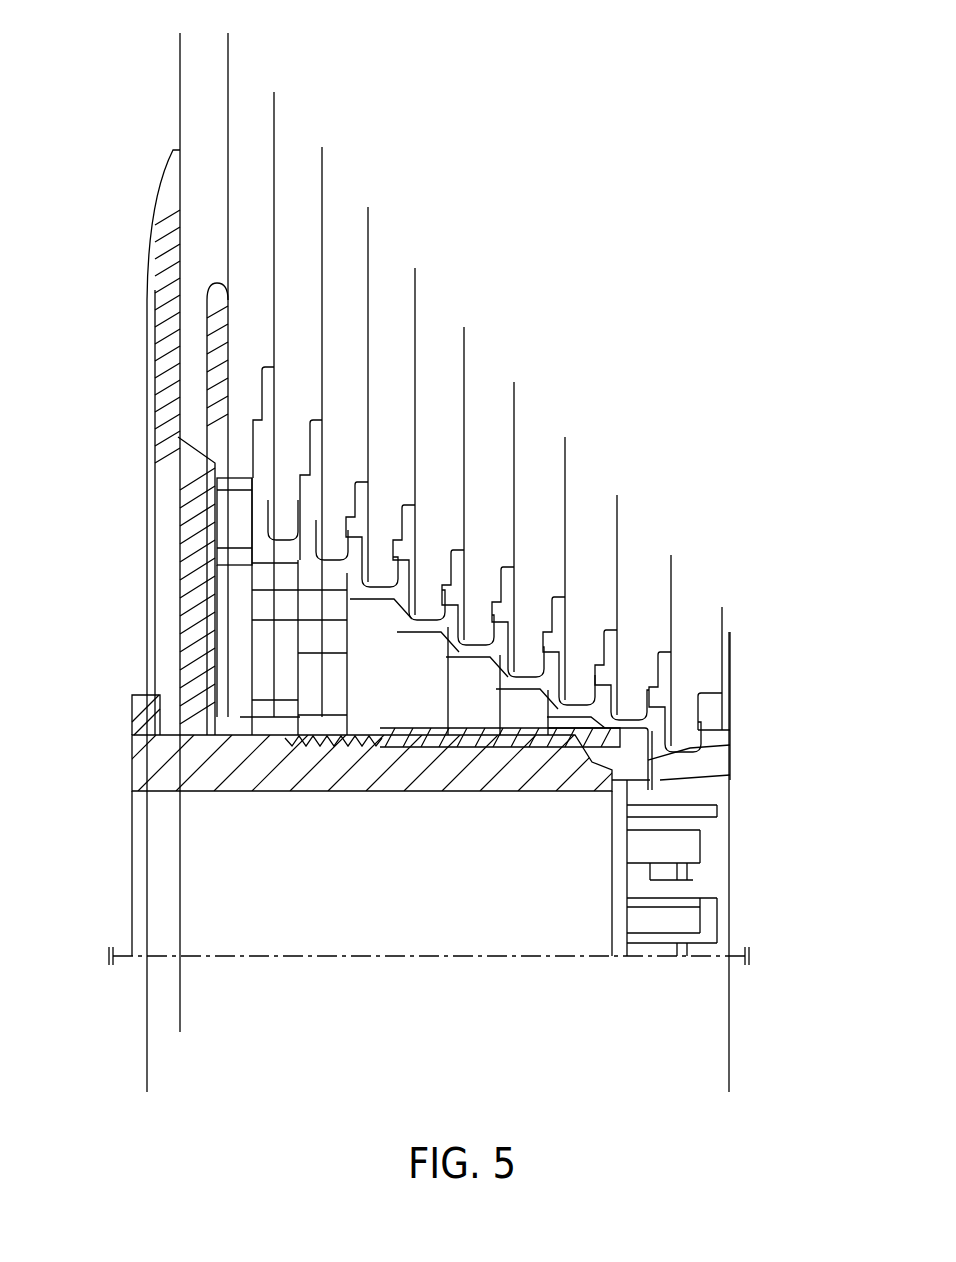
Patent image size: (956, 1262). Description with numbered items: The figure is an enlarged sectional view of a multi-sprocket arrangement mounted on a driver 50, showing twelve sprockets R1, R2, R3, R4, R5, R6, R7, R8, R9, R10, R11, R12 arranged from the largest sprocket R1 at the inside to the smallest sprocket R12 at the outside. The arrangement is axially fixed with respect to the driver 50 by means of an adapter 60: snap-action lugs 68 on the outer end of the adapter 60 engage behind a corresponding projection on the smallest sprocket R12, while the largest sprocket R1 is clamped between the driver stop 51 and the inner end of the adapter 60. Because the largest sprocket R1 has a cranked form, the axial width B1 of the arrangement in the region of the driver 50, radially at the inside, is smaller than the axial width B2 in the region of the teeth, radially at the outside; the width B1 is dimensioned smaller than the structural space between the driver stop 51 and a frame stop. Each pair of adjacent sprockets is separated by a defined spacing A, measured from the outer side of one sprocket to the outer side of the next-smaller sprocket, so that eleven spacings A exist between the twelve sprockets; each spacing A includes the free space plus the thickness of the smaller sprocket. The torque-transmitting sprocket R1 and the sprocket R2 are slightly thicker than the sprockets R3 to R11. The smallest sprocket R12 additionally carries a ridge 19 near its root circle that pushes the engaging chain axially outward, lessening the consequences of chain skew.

The ridge 19 is at (712, 752).
The driver 50 is at (200, 752).
The driver stop 51 is at (152, 713).
The adapter 60 is at (467, 740).
The snap-action lugs 68 is at (712, 853).
The largest sprocket R1 is at (180, 48).
The second-largest sprocket R2 is at (195, 106).
The third sprocket R3 is at (241, 165).
The fourth sprocket R4 is at (289, 220).
The fifth sprocket R5 is at (335, 280).
The sixth sprocket R6 is at (382, 341).
The seventh sprocket R7 is at (431, 400).
The eighth sprocket R8 is at (481, 455).
The ninth sprocket R9 is at (532, 510).
The tenth sprocket R10 is at (584, 568).
The second-smallest sprocket R11 is at (638, 642).
The smallest sprocket R12 is at (725, 655).
The spacing A is at (228, 48).
The axial width in the region of the driver B1 is at (729, 1020).
The axial width in the region of the teeth B2 is at (147, 1067).